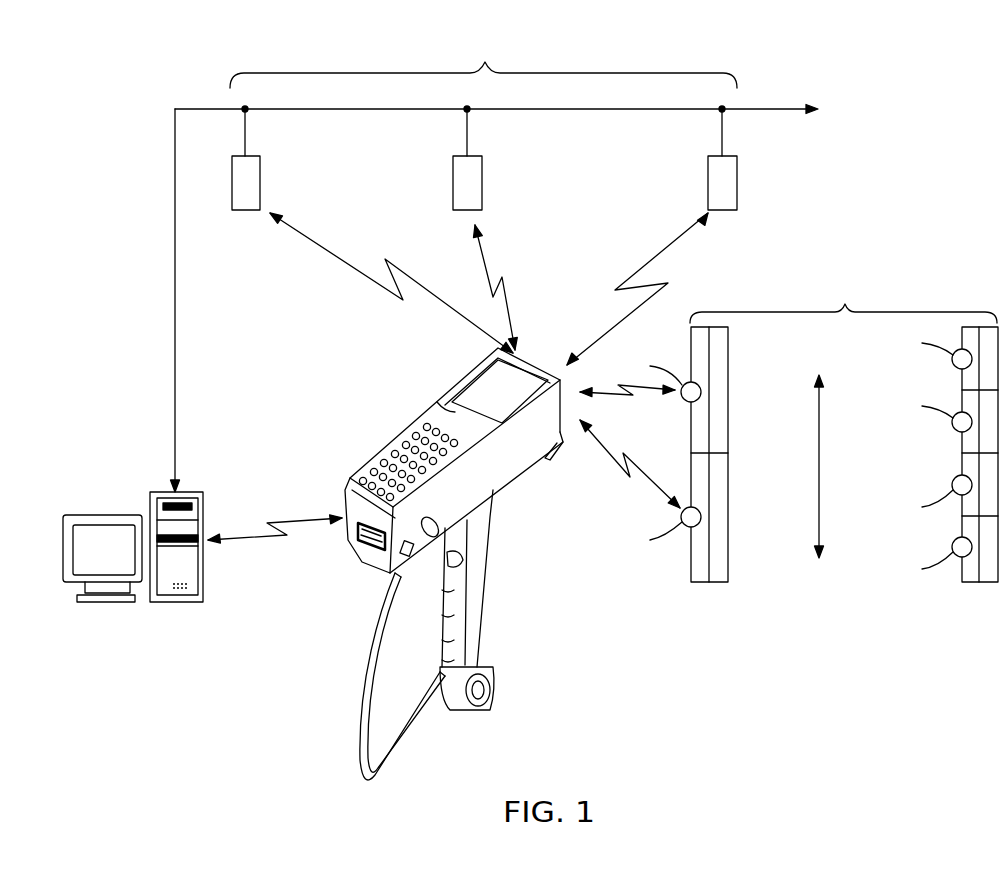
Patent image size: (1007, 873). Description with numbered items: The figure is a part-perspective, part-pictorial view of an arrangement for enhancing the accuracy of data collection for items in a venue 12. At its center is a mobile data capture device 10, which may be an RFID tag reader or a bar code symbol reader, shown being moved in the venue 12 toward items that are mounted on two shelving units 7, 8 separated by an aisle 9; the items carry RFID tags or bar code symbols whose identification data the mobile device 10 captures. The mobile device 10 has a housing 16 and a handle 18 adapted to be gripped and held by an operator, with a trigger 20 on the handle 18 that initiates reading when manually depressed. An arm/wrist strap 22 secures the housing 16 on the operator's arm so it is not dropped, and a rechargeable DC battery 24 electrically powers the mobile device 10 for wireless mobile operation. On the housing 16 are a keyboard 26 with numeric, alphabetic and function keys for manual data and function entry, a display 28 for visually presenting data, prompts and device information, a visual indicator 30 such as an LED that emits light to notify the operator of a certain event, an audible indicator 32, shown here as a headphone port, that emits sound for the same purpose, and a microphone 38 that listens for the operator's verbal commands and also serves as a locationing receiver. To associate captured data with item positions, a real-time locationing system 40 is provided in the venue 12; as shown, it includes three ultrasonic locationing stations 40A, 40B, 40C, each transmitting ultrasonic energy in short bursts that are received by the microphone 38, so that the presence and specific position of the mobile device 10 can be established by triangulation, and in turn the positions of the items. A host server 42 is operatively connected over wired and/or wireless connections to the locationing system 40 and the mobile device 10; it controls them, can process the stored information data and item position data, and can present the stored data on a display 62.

The shelving unit 7 is at (720, 327).
The shelving unit 8 is at (970, 327).
The aisle 9 is at (866, 476).
The mobile data capture device 10 is at (513, 490).
The venue 12 is at (901, 296).
The housing 16 is at (437, 403).
The handle 18 is at (477, 623).
The trigger 20 is at (493, 522).
The arm/wrist strap 22 is at (390, 672).
The rechargeable DC battery 24 is at (373, 565).
The keyboard 26 is at (402, 450).
The display 28 is at (456, 410).
The visual indicator 30 is at (448, 407).
The audible indicator 32 is at (558, 447).
The microphone 38 is at (533, 358).
The locationing system 40 is at (623, 53).
The locationing station 40A is at (246, 212).
The locationing station 40B is at (453, 184).
The locationing station 40C is at (721, 212).
The host server 42 is at (241, 633).
The display 62 is at (103, 514).